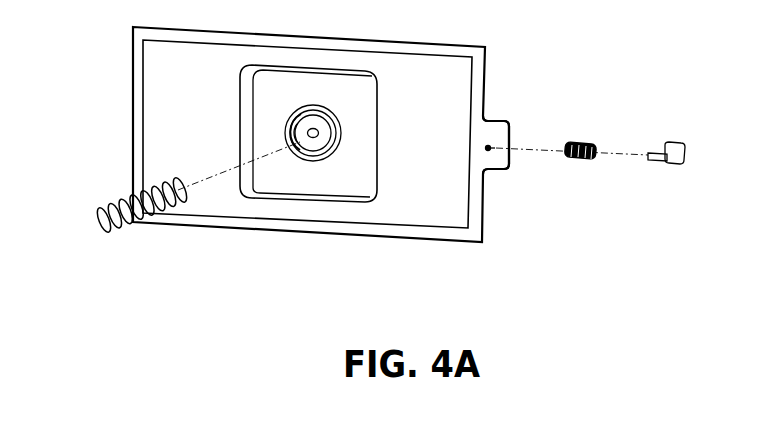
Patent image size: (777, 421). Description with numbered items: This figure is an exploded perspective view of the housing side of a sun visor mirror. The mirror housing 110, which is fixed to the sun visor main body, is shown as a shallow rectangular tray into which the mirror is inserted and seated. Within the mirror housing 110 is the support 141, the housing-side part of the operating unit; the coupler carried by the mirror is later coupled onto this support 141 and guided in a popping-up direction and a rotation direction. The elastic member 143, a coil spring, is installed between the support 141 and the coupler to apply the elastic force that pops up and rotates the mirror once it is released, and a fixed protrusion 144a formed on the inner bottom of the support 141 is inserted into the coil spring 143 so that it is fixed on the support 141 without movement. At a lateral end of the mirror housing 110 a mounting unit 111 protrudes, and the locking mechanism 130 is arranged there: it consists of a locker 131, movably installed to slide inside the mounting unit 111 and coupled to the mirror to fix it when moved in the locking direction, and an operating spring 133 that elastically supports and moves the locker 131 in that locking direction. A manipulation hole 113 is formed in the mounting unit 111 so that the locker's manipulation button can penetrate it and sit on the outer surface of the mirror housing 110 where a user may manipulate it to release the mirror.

The mirror housing 110 is at (408, 240).
The mounting unit 111 is at (500, 121).
The manipulation hole 113 is at (487, 152).
The locking mechanism 130 is at (598, 125).
The locker 131 is at (653, 165).
The operating spring 133 is at (574, 160).
The support 141 is at (300, 155).
The elastic member 143 is at (110, 203).
The fixed protrusion 144a is at (316, 139).